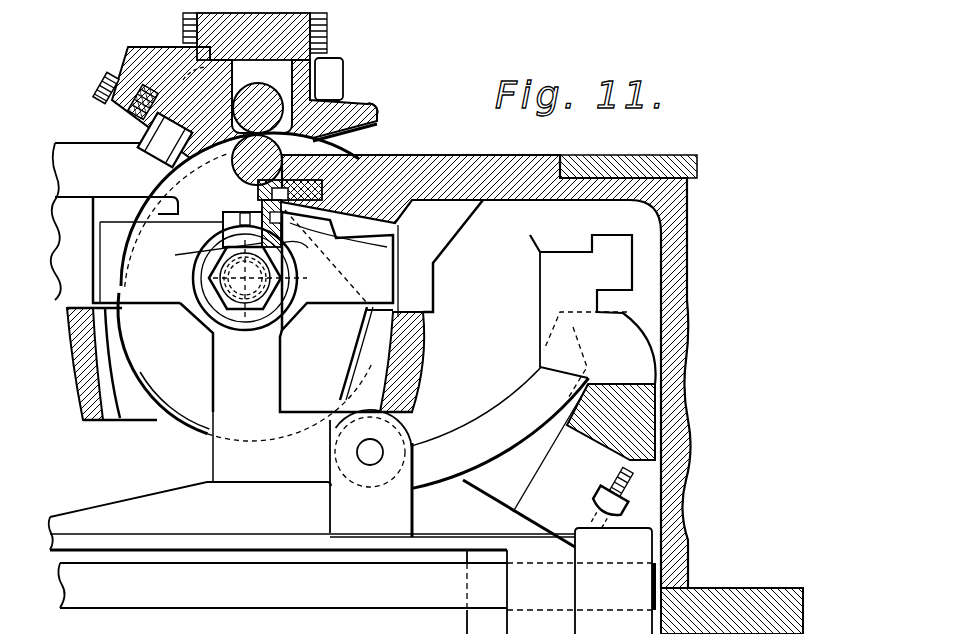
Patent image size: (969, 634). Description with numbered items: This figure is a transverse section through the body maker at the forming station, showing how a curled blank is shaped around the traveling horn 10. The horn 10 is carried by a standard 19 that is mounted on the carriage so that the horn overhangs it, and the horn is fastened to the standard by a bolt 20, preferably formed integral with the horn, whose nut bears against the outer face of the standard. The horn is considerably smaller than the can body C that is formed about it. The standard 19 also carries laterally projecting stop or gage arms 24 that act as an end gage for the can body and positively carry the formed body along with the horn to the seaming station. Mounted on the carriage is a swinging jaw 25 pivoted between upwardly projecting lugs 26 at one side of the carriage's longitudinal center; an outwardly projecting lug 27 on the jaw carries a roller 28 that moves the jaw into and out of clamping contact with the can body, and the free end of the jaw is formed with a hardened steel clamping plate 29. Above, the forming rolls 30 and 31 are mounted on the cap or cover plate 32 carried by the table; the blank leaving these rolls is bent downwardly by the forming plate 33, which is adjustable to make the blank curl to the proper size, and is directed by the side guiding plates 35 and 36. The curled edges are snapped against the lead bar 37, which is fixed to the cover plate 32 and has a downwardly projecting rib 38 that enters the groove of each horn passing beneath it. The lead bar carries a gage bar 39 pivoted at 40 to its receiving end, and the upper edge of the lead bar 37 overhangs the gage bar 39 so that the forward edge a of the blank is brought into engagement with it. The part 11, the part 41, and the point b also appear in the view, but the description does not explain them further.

The horn 10 is at (224, 222).
The base bar 11 is at (273, 543).
The standard 19 is at (216, 408).
The bolt 20 is at (256, 312).
The stop or gage arms 24 is at (340, 270).
The swinging jaw 25 is at (507, 423).
The upwardly projecting lugs 26 is at (393, 453).
The outwardly projecting lug 27 is at (500, 486).
The roller 28 is at (630, 488).
The hardened steel clamping plate 29 is at (540, 241).
The forming roll 30 is at (268, 98).
The forming roll 31 is at (318, 100).
The cap or cover plate 32 is at (490, 164).
The forming plate 33 is at (150, 121).
The side guiding plate 35 is at (88, 403).
The side guiding plate 36 is at (412, 343).
The lead bar 37 is at (307, 157).
The downwardly projecting rib 38 is at (257, 192).
The gage bar 39 is at (309, 252).
The pivot 40 is at (199, 255).
The stem 41 is at (262, 205).
The forward edge or side of the blank a is at (378, 252).
The plate end b is at (378, 120).
The can bodies C is at (165, 405).